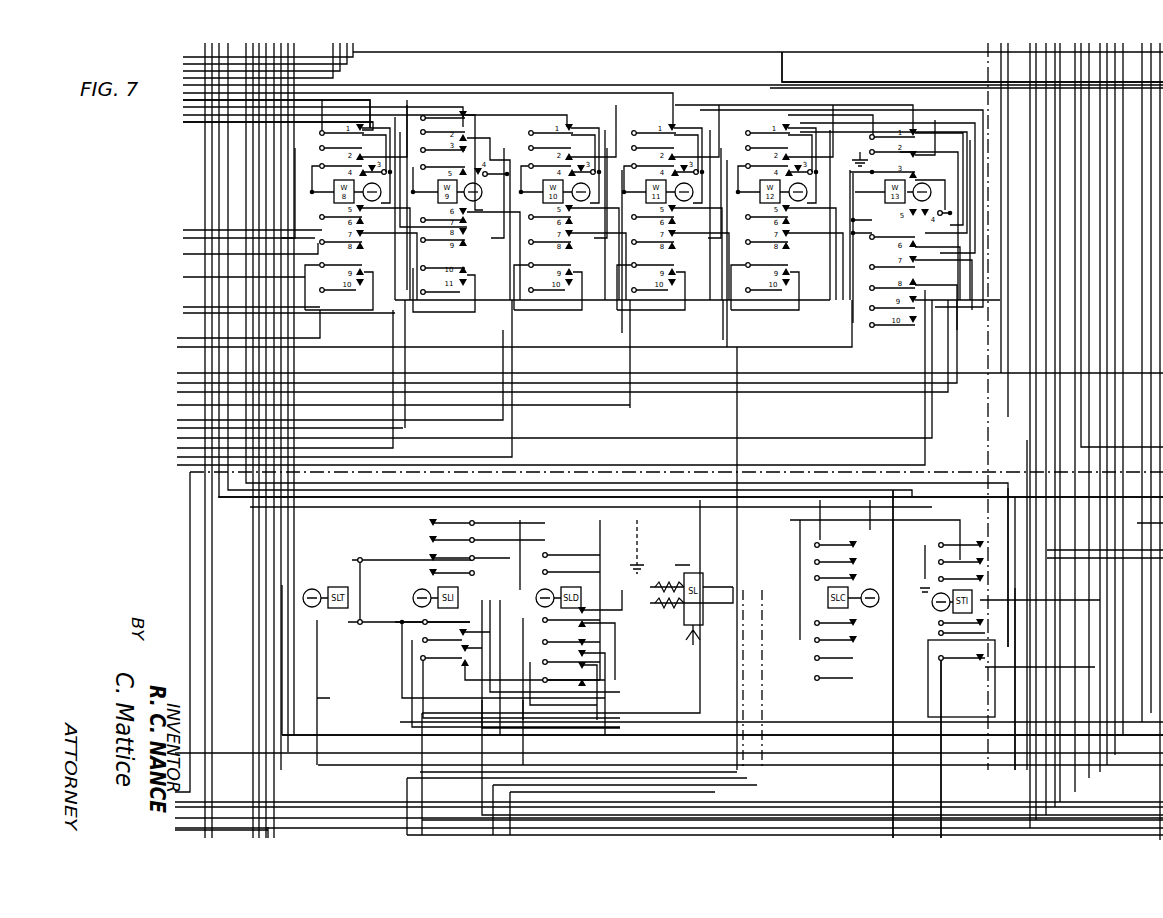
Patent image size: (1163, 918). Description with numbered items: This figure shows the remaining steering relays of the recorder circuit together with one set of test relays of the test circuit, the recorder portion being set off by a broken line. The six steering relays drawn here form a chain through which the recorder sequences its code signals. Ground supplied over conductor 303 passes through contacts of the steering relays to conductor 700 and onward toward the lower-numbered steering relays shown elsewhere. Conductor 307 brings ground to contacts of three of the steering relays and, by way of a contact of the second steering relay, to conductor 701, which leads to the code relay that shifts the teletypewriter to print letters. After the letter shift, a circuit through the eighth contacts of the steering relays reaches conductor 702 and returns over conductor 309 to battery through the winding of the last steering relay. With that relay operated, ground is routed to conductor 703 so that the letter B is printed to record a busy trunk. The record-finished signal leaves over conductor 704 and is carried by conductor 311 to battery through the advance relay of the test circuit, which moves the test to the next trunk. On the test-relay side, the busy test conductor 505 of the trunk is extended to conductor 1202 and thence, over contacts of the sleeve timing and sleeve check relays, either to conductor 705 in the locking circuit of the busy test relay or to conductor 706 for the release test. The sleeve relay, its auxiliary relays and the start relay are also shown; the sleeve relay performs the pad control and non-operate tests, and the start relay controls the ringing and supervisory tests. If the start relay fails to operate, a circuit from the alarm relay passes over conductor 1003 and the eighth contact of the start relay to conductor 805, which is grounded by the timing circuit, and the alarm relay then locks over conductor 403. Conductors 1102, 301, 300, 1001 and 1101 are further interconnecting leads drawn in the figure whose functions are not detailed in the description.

The conductor 307 is at (196, 121).
The conductor 700 is at (385, 104).
The conductor 311 is at (418, 85).
The conductor 505 is at (673, 53).
The conductor 1102 is at (812, 82).
The conductor 301 is at (333, 372).
The conductor 703 is at (405, 348).
The conductor 702 is at (505, 421).
The conductor 701 is at (393, 448).
The conductor 303 is at (827, 385).
The conductor 704 is at (830, 448).
The conductor 705 is at (1017, 497).
The conductor 1202 is at (932, 507).
The conductor 309 is at (332, 736).
The conductor 300 is at (275, 818).
The conductor 1001 is at (296, 830).
The conductor 403 is at (352, 802).
The conductor 1101 is at (846, 768).
The conductor 706 is at (893, 790).
The conductor 805 is at (941, 790).
The conductor 1003 is at (992, 672).